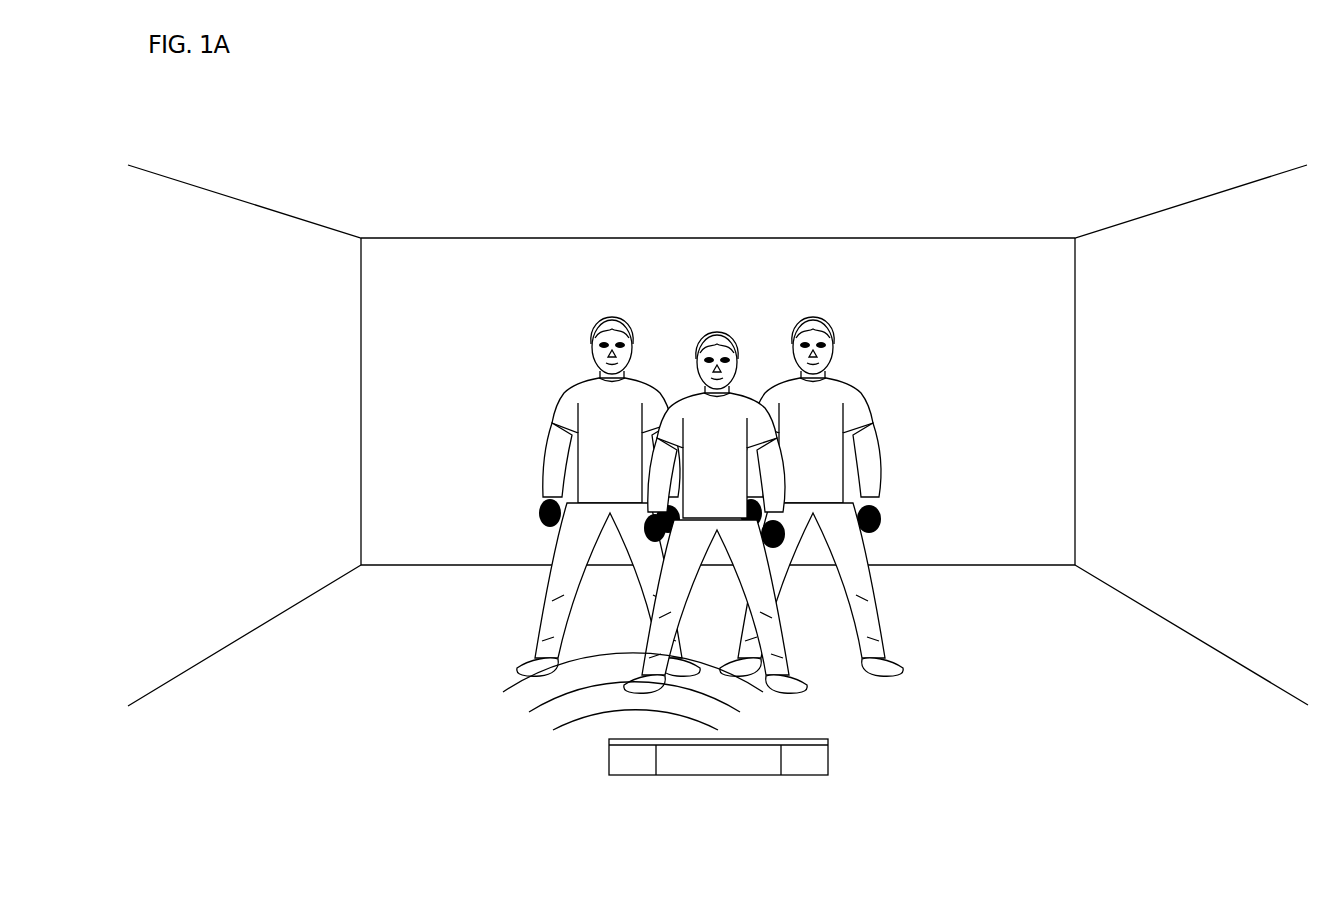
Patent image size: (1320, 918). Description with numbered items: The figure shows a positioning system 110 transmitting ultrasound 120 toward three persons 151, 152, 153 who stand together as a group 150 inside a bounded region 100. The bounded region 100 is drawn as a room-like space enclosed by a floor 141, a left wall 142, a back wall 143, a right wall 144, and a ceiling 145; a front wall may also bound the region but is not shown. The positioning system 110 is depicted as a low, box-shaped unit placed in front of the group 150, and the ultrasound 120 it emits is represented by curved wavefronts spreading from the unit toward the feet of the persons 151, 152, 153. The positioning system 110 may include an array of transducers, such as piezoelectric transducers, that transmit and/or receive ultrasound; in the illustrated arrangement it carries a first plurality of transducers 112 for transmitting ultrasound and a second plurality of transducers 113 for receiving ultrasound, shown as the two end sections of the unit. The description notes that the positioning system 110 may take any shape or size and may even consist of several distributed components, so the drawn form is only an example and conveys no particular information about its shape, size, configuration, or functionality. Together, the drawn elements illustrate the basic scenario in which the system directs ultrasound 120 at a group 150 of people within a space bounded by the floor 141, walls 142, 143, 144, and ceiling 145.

The bounded region 100 is at (718, 435).
The positioning system 110 is at (718, 774).
The first plurality of transducers 112 is at (621, 777).
The second plurality of transducers 113 is at (808, 777).
The ultrasound 120 is at (482, 733).
The floor 141 is at (393, 600).
The left wall 142 is at (346, 560).
The back wall 143 is at (406, 560).
The right wall 144 is at (1115, 560).
The ceiling 145 is at (394, 233).
The group 150 is at (739, 484).
The person 151 is at (598, 322).
The person 152 is at (707, 330).
The person 153 is at (802, 320).